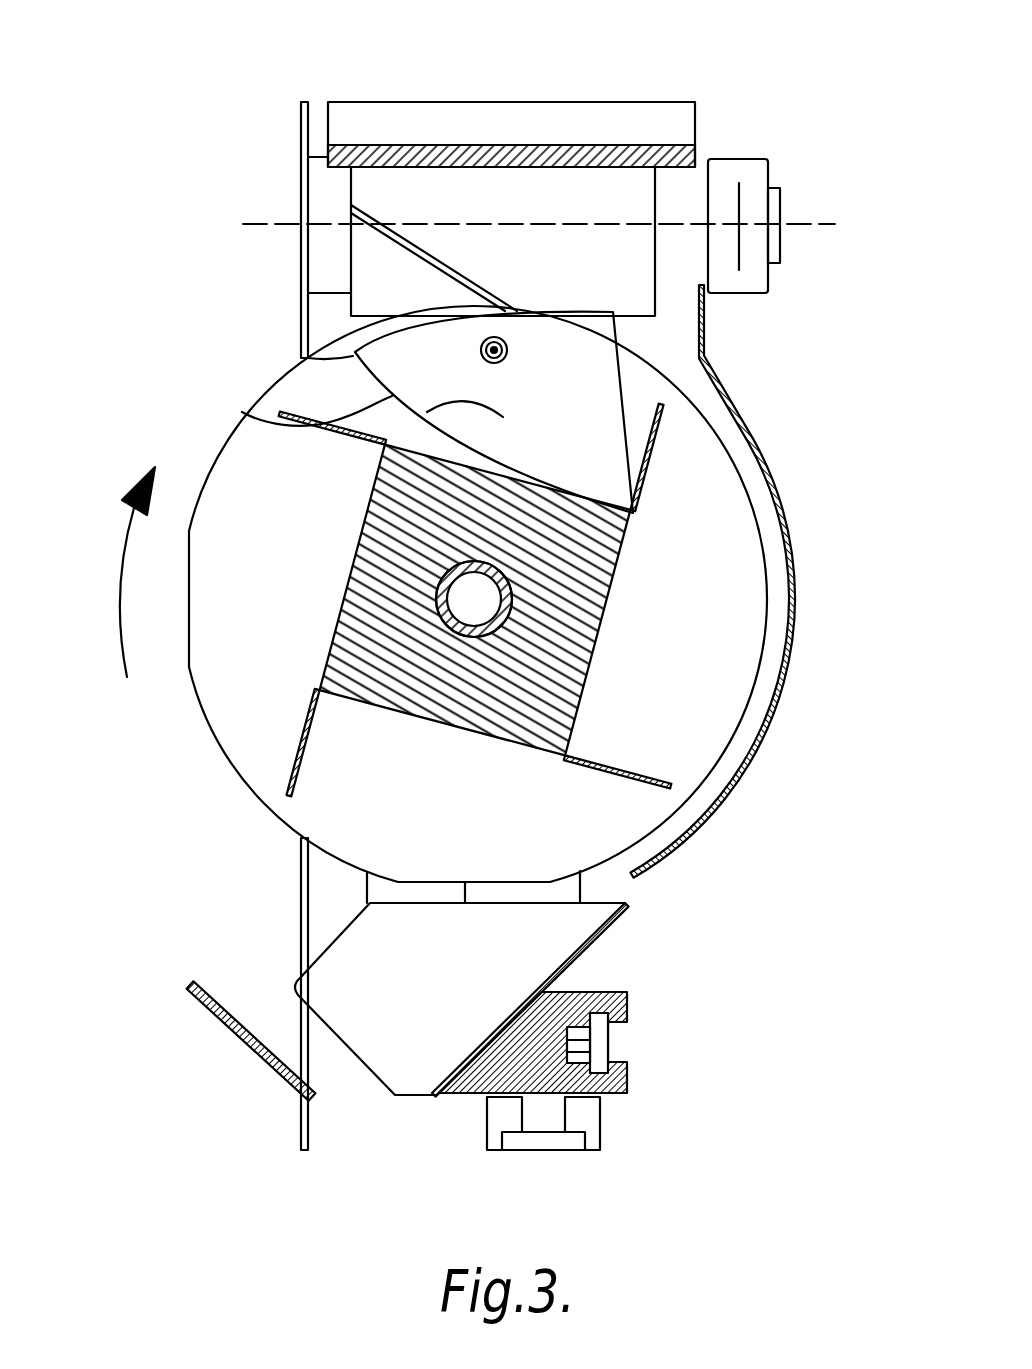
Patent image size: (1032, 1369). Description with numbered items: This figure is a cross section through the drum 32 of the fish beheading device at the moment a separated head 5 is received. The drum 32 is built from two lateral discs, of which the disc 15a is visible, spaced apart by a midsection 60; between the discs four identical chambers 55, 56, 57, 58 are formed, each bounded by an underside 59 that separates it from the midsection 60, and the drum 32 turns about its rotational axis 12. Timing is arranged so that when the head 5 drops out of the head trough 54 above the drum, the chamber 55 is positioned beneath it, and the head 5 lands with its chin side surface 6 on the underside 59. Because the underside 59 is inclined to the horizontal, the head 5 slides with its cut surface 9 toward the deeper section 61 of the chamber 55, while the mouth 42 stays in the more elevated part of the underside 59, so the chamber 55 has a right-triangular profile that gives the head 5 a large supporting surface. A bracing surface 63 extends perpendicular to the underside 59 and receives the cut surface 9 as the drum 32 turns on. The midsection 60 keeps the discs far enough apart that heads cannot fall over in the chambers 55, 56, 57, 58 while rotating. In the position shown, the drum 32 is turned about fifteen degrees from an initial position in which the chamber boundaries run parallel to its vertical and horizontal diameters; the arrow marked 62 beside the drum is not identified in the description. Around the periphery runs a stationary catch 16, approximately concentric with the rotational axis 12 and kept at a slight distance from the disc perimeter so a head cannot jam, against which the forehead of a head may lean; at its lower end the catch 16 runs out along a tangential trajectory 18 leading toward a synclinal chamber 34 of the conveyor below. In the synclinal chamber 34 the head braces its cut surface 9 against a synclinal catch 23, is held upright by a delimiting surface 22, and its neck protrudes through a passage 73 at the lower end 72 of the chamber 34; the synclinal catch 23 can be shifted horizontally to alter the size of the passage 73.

The head 5 is at (570, 348).
The head trough 54 is at (637, 197).
The mouth 42 is at (306, 358).
The chamber 55 is at (316, 386).
The chin side surface 6 is at (372, 437).
The underside 59 is at (385, 445).
The direction of rotation 62 is at (117, 568).
The chamber 58 is at (232, 590).
The midsection 60 is at (387, 658).
The drum 32 is at (240, 790).
The synclinal chamber 34 is at (328, 978).
The synclinal catch 23 is at (232, 1040).
The passage 73 is at (362, 1098).
The lower end 72 is at (413, 1097).
The delimiting surface 22 is at (440, 970).
The lateral disc 15a is at (418, 796).
The cut surface 9 is at (702, 358).
The bracing surface 63 is at (672, 442).
The section 61 is at (655, 445).
The chamber 56 is at (733, 506).
The stationary catch 16 is at (793, 570).
The rotational axis 12 is at (510, 601).
The tangential trajectory 18 is at (700, 822).
The chamber 57 is at (522, 822).